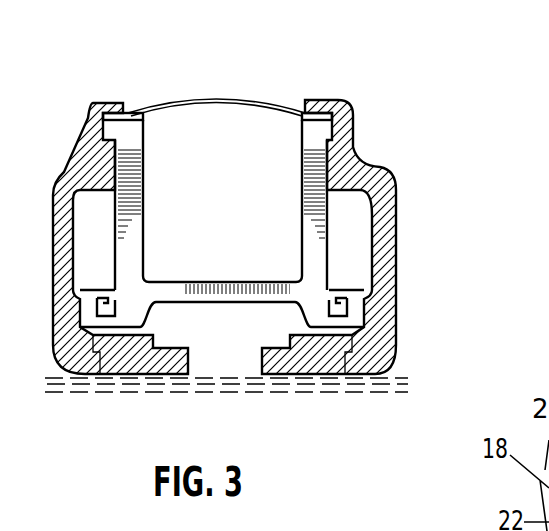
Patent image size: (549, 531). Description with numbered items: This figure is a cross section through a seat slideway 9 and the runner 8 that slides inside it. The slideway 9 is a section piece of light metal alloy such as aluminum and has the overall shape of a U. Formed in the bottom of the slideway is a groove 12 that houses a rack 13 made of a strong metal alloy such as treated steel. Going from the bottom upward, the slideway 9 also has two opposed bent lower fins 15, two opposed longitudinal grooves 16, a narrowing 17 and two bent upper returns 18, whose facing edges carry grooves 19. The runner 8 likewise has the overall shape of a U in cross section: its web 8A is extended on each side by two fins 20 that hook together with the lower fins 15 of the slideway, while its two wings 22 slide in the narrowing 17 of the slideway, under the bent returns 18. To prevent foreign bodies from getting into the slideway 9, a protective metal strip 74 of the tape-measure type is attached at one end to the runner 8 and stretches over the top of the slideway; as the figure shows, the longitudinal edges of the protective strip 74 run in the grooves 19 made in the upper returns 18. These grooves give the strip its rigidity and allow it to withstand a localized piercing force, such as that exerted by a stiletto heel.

The slideway 9 is at (422, 108).
The grooves 19 is at (132, 108).
The bent upper returns 18 is at (333, 108).
The protective metal strip 74 is at (182, 101).
The narrowing 17 is at (320, 151).
The wings 22 is at (133, 153).
The runner 8 is at (248, 260).
The web 8A is at (205, 280).
The longitudinal grooves 16 is at (98, 283).
The bent lower fins 15 is at (366, 291).
The fins 20 is at (348, 320).
The groove 12 is at (108, 350).
The rack 13 is at (305, 343).